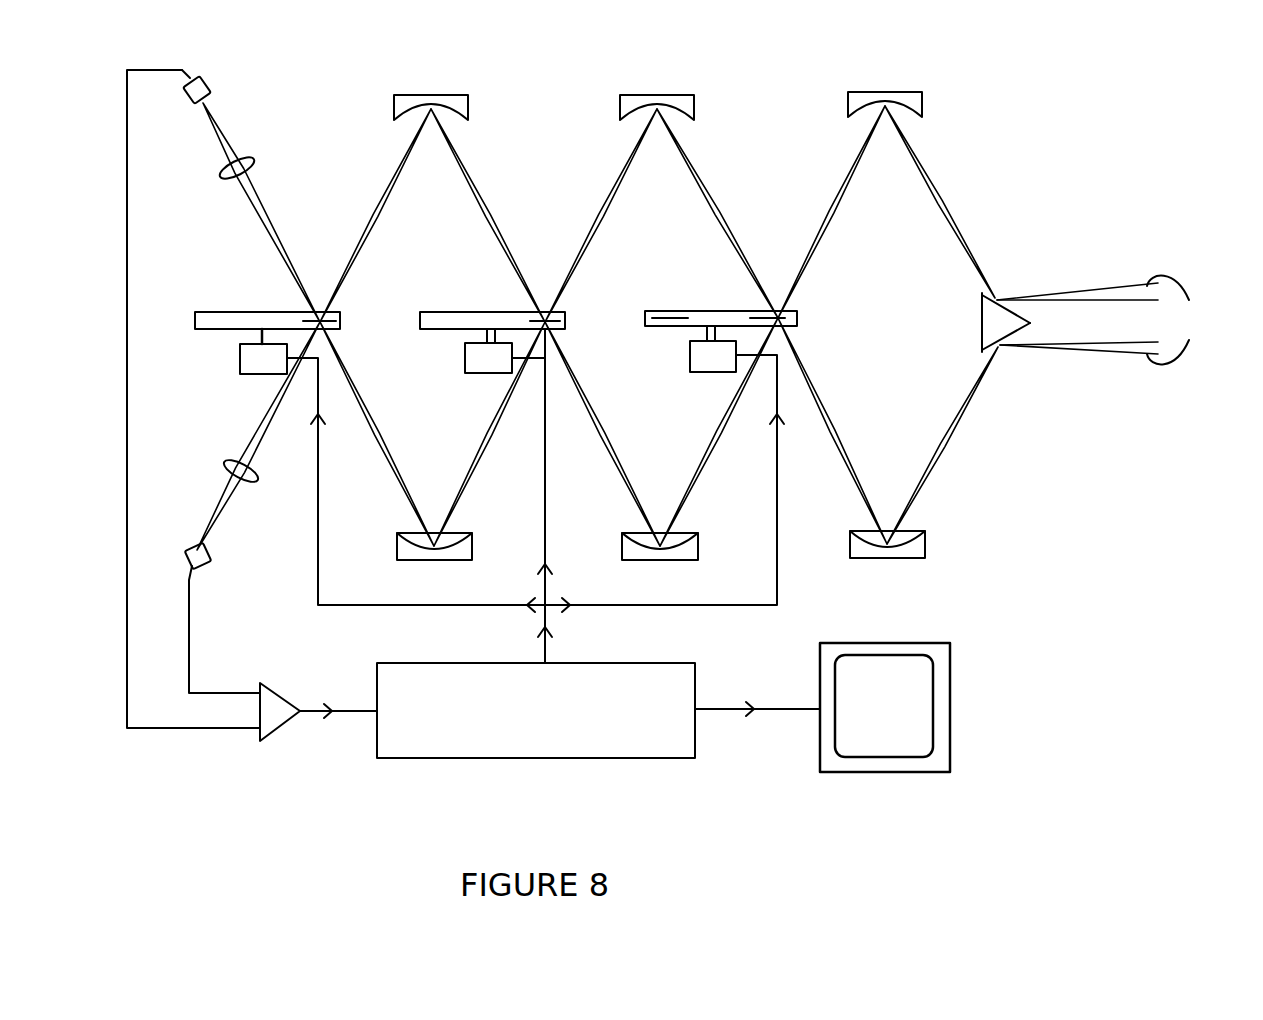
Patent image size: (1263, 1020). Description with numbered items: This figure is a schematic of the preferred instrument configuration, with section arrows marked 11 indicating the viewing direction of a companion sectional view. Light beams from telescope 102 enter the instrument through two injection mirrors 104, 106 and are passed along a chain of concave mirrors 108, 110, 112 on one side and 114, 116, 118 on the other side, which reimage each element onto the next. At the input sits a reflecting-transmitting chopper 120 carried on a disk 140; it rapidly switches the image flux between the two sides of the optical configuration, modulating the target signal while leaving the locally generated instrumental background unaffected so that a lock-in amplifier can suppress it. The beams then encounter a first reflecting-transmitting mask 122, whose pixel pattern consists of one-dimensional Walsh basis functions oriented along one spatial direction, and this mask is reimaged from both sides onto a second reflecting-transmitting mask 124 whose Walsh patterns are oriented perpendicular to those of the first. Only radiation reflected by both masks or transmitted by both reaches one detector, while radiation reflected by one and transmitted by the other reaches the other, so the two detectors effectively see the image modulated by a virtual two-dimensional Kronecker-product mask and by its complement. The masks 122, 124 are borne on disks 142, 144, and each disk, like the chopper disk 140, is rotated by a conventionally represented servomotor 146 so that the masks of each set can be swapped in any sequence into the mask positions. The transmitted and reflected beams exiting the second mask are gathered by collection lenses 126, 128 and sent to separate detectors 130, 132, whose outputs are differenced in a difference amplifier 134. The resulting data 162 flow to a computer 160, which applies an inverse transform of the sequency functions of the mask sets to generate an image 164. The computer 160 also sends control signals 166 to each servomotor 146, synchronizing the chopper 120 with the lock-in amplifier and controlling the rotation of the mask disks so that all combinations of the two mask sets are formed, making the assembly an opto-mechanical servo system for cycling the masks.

The light beams from telescope 102 is at (1187, 320).
The injection mirror 104 is at (985, 296).
The injection mirror 106 is at (985, 350).
The concave mirror 108 is at (430, 95).
The concave mirror 110 is at (662, 95).
The concave mirror 112 is at (892, 92).
The concave mirror 114 is at (443, 561).
The concave mirror 116 is at (665, 561).
The concave mirror 118 is at (890, 559).
The chopper 120 is at (770, 316).
The mask 122 is at (560, 322).
The mask 124 is at (332, 321).
The collection lens 126 is at (262, 165).
The collection lens 128 is at (258, 480).
The detector 130 is at (210, 82).
The detector 132 is at (212, 560).
The difference amplifier 134 is at (278, 732).
The disk with chopper 140 is at (672, 336).
The disk with masks 142 is at (451, 336).
The disk with masks 144 is at (226, 336).
The servomotor for disks 146 is at (262, 377).
The computer 160 is at (537, 760).
The data to computer 162 is at (331, 718).
The image 164 is at (912, 692).
The control signals from computer 166 is at (545, 575).
The section line 11 is at (374, 460).